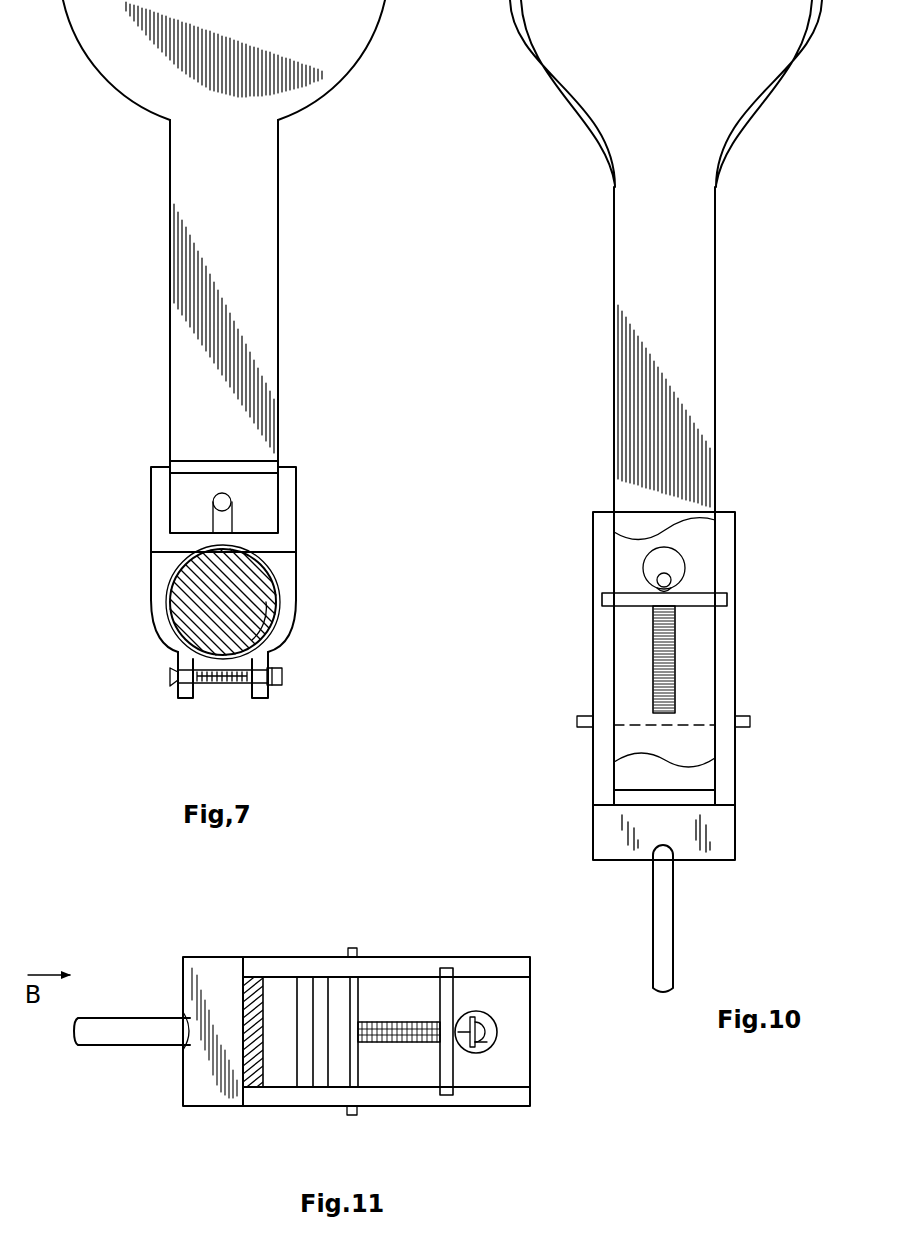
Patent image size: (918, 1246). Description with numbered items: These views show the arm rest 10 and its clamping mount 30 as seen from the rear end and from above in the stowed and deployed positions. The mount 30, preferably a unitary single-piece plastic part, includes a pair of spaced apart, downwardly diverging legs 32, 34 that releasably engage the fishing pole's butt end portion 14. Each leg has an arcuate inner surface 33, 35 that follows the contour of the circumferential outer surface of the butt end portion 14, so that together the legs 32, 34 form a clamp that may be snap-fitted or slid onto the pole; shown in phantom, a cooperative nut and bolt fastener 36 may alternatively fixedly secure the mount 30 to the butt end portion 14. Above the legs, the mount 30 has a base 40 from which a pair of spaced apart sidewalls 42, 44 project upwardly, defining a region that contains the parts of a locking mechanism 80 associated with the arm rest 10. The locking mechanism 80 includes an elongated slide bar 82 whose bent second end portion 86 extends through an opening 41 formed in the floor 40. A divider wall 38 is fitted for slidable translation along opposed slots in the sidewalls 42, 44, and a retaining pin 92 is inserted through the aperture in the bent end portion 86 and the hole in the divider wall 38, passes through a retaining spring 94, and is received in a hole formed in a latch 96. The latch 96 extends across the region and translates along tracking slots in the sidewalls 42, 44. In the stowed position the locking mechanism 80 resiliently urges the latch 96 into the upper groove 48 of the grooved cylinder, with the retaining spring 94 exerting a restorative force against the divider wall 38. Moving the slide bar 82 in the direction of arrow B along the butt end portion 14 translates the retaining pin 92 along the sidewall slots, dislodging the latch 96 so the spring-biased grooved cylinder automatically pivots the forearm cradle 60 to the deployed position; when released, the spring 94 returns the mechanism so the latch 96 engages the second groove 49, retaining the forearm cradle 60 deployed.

In FIG. 7, the arm rest 10 is at (352, 360).
In FIG. 10, the arm rest 10 is at (570, 450).
In FIG. 11, the arm rest 10 is at (180, 1133).
In FIG. 7, the butt end portion 14 is at (247, 583).
In FIG. 7, the mount 30 is at (137, 505).
In FIG. 10, the mount 30 is at (565, 655).
In FIG. 11, the mount 30 is at (218, 965).
In FIG. 7, the leg 32 is at (157, 607).
In FIG. 7, the arcuate inner surface 33 is at (178, 632).
In FIG. 7, the leg 34 is at (287, 612).
In FIG. 7, the arcuate inner surface 35 is at (270, 630).
In FIG. 7, the nut and bolt fastener 36 is at (220, 685).
In FIG. 10, the divider wall 38 is at (697, 603).
In FIG. 11, the divider wall 38 is at (445, 997).
In FIG. 10, the base 40 is at (644, 677).
In FIG. 11, the base 40 is at (509, 1008).
In FIG. 10, the opening 41 is at (672, 562).
In FIG. 11, the opening 41 is at (496, 1032).
In FIG. 11, the sidewall 42 is at (305, 1100).
In FIG. 11, the sidewall 44 is at (513, 967).
In FIG. 10, the upper groove 48 is at (636, 722).
In FIG. 11, the second groove 49 is at (315, 988).
In FIG. 10, the forearm cradle 60 is at (697, 340).
In FIG. 11, the forearm cradle 60 is at (255, 978).
In FIG. 10, the locking mechanism 80 is at (690, 660).
In FIG. 11, the locking mechanism 80 is at (390, 1089).
In FIG. 10, the slide bar 82 is at (660, 942).
In FIG. 11, the slide bar 82 is at (150, 1030).
In FIG. 10, the bent second end portion 86 is at (671, 583).
In FIG. 11, the bent second end portion 86 is at (478, 1053).
In FIG. 10, the retaining pin 92 is at (655, 578).
In FIG. 11, the retaining pin 92 is at (492, 1042).
In FIG. 10, the retaining spring 94 is at (675, 693).
In FIG. 11, the retaining spring 94 is at (385, 1018).
In FIG. 10, the latch 96 is at (583, 716).
In FIG. 11, the latch 96 is at (360, 992).